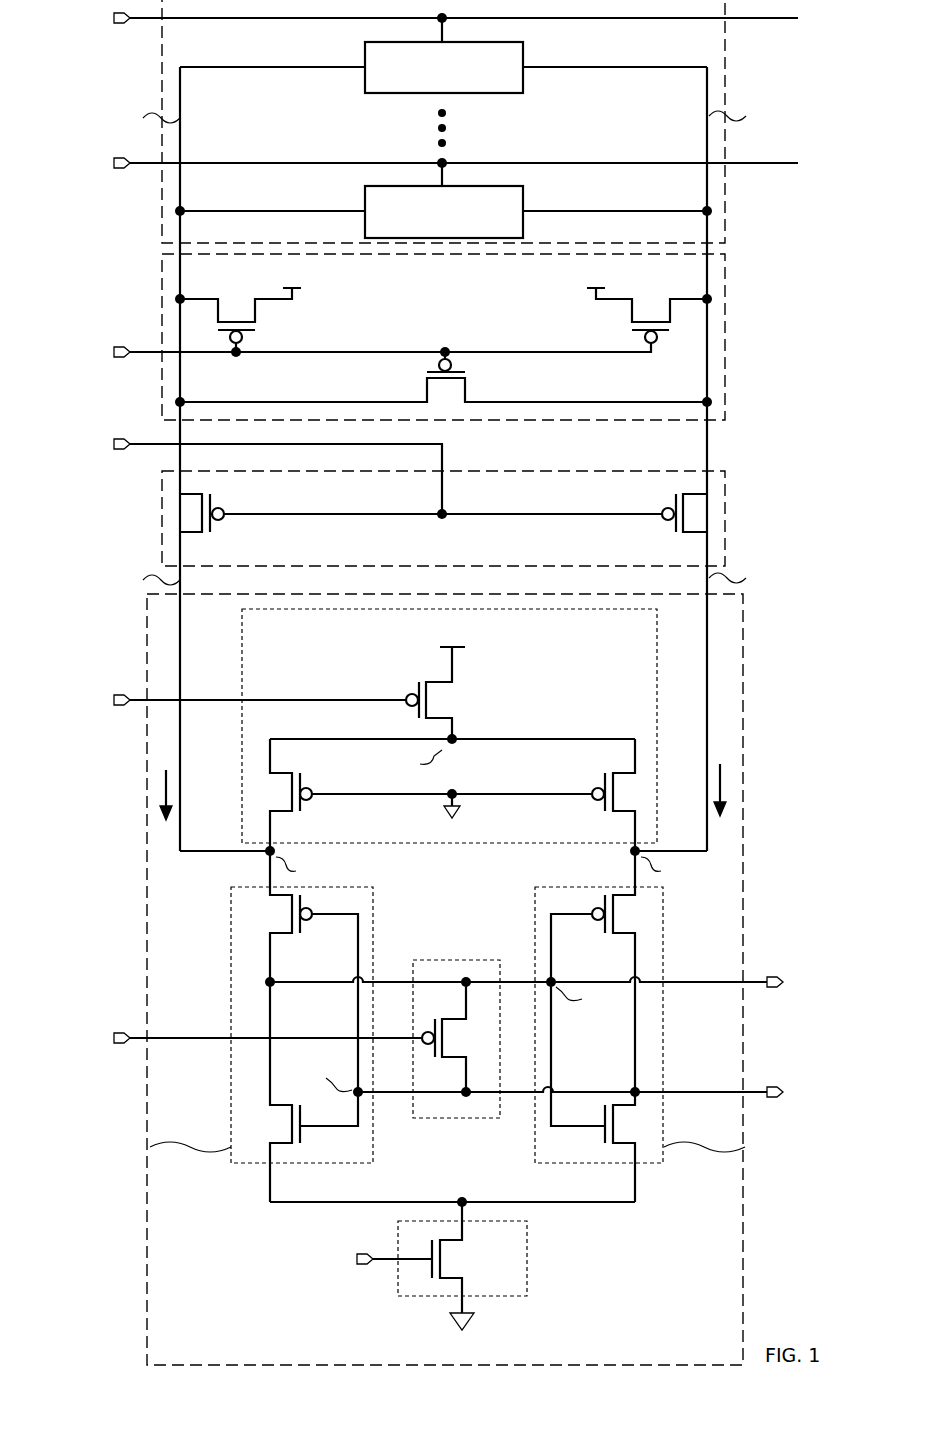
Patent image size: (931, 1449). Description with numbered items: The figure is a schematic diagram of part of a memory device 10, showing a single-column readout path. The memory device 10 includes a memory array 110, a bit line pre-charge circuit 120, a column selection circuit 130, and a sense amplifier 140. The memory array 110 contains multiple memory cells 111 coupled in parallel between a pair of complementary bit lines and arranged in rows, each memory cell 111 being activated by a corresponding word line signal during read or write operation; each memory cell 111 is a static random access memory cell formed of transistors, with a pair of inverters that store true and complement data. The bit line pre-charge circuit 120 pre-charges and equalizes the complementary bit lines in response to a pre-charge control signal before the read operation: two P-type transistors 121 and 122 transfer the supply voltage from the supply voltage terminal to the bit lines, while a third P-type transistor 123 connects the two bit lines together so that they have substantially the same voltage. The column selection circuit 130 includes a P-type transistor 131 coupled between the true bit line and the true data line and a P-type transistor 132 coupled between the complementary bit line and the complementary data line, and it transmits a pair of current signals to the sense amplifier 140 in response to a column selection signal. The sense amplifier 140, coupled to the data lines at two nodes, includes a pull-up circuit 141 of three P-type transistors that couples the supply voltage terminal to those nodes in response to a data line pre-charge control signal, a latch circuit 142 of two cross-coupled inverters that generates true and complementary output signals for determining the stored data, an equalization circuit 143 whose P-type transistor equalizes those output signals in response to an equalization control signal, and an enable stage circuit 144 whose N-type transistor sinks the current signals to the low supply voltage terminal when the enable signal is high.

The memory device 10 is at (800, 56).
The memory array 110 is at (726, 232).
The memory cell 111 is at (427, 80).
The bit line pre-charge circuit 120 is at (727, 347).
The P-type transistor 121 is at (257, 320).
The P-type transistor 122 is at (626, 320).
The P-type transistor 123 is at (424, 387).
The column selection circuit 130 is at (727, 488).
The P-type transistor 131 is at (196, 513).
The P-type transistor 132 is at (690, 513).
The sense amplifier 140 is at (745, 688).
The pull-up circuit 141 is at (657, 672).
The latch circuit 142 is at (692, 903).
The equalization circuit 143 is at (452, 960).
The enable stage circuit 144 is at (529, 1264).